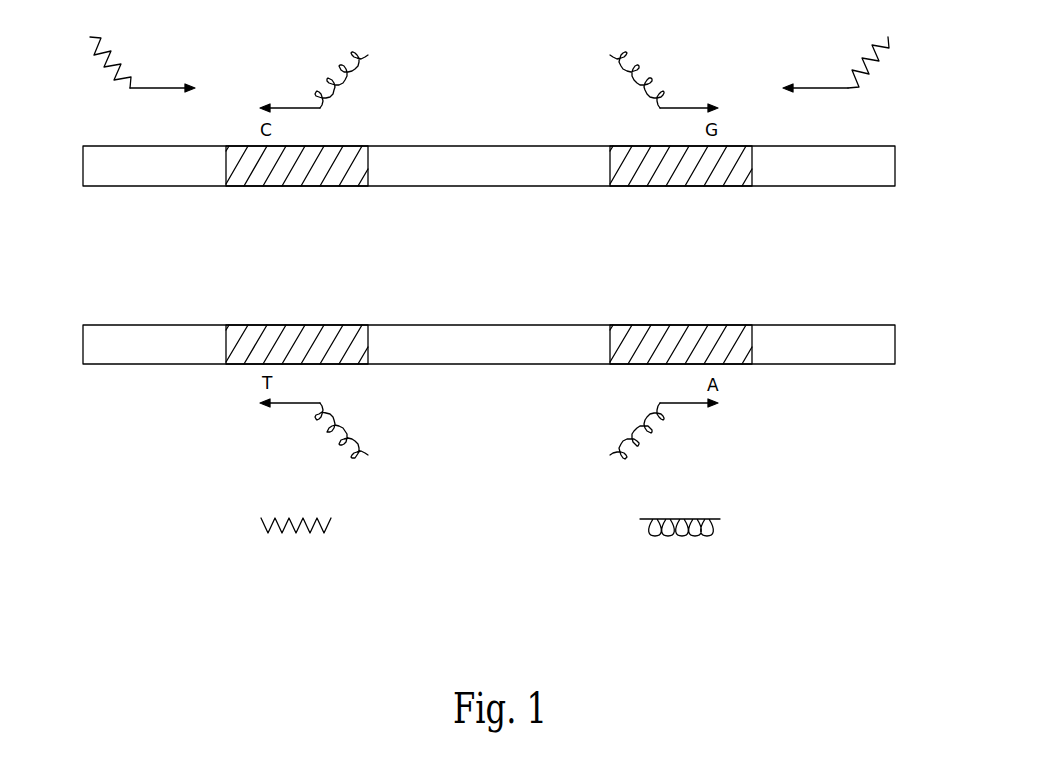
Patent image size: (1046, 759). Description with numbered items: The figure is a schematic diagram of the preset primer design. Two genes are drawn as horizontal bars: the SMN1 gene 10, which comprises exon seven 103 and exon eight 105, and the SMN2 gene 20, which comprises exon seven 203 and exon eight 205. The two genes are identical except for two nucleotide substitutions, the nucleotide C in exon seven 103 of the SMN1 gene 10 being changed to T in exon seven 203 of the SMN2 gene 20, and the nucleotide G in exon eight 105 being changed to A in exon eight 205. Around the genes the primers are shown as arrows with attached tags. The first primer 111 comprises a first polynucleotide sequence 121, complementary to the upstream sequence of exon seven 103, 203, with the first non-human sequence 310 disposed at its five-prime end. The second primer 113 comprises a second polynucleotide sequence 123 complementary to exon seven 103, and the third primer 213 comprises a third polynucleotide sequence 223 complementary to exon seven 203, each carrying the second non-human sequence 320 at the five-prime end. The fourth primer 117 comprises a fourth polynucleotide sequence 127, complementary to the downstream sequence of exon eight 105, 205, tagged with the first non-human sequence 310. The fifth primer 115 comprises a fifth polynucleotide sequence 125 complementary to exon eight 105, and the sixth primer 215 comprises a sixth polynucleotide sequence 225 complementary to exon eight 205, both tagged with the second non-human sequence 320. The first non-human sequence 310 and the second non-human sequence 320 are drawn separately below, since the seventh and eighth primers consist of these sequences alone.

The SMN1 gene 10 is at (905, 167).
The SMN2 gene 20 is at (905, 346).
The exon 7 103 is at (298, 190).
The exon 8 105 is at (681, 190).
The exon 7 203 is at (297, 322).
The exon 8 205 is at (682, 322).
The first primer 111 is at (86, 37).
The second primer 113 is at (372, 55).
The fifth primer 115 is at (606, 55).
The fourth primer 117 is at (892, 37).
The first polynucleotide sequence 121 is at (165, 85).
The second polynucleotide sequence 123 is at (293, 104).
The fifth polynucleotide sequence 125 is at (685, 104).
The fourth polynucleotide sequence 127 is at (814, 85).
The third primer 213 is at (372, 397).
The sixth primer 215 is at (606, 397).
The third polynucleotide sequence 223 is at (292, 407).
The sixth polynucleotide sequence 225 is at (686, 407).
The first non-human sequence 310 is at (296, 535).
The second non-human sequence 320 is at (681, 535).